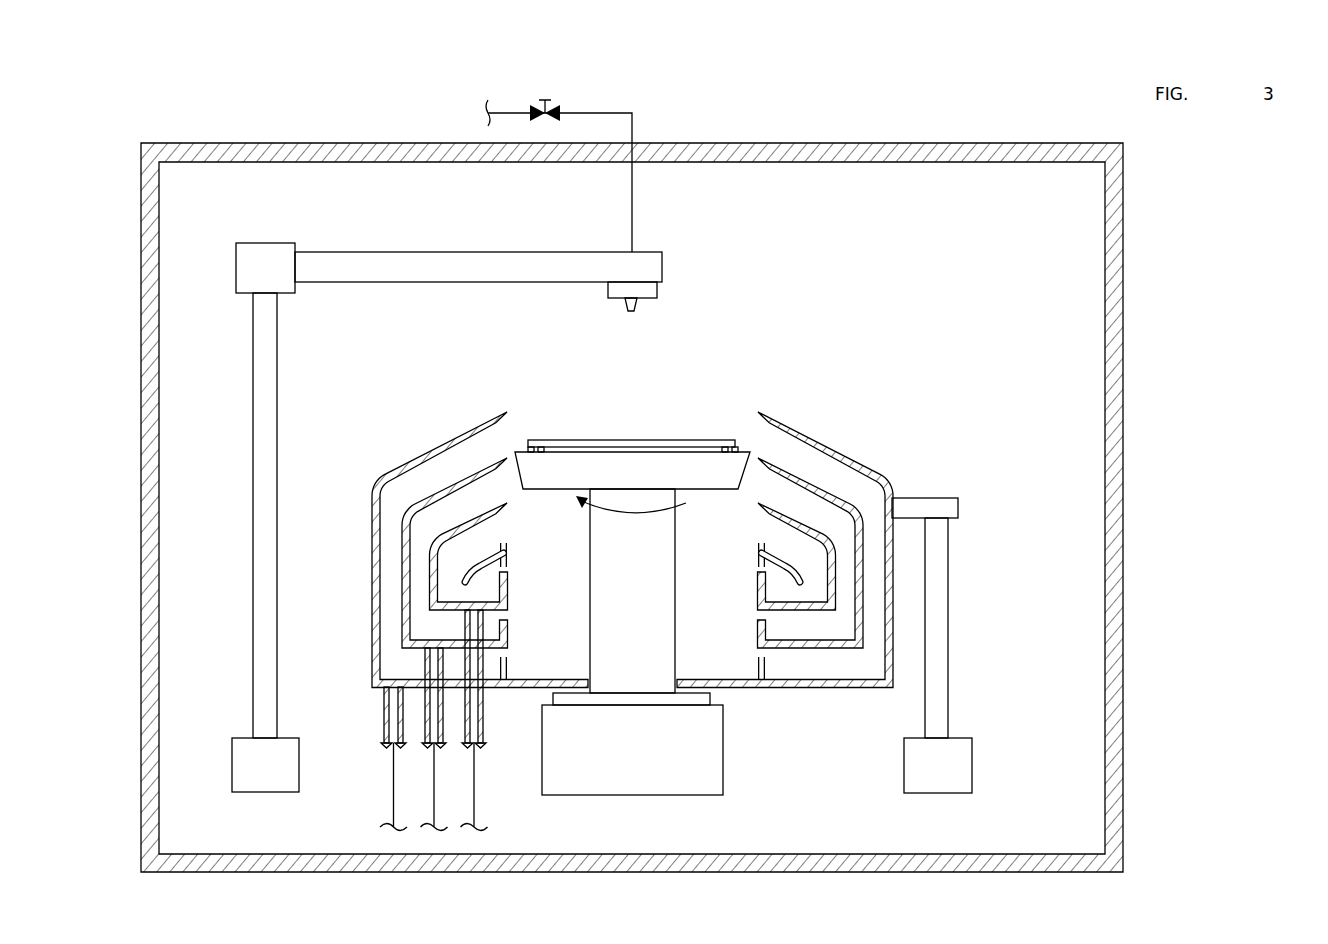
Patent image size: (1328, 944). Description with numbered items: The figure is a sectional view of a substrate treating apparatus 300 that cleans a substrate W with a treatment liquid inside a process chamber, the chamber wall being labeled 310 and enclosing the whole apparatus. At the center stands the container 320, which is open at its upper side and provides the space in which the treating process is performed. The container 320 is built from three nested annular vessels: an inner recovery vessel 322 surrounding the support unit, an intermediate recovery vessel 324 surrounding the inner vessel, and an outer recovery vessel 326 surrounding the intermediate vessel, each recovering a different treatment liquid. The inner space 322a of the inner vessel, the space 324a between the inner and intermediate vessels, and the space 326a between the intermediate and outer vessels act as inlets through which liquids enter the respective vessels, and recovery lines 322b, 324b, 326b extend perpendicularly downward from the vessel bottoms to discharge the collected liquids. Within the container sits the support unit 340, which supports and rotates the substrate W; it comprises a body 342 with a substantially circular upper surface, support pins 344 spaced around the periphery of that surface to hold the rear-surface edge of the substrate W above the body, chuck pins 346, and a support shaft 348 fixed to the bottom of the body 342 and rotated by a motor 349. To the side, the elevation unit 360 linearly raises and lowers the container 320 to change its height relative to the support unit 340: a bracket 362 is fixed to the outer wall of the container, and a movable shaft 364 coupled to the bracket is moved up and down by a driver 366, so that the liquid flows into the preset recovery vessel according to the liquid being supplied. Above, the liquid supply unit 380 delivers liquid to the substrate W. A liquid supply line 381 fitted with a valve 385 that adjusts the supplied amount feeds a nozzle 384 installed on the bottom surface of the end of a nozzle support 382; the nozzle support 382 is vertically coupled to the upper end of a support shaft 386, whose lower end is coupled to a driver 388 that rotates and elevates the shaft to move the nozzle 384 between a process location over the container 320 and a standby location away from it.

The substrate treating apparatus 300 is at (974, 300).
The chamber 310 is at (1124, 506).
The container 320 is at (608, 612).
The inner recovery vessel 322 is at (822, 536).
The intermediate recovery vessel 324 is at (813, 487).
The outer recovery vessel 326 is at (797, 433).
The inner space 322a is at (478, 520).
The space between inner and intermediate recovery vessels 324a is at (462, 484).
The space between intermediate and outer recovery vessels 326a is at (440, 445).
The recovery line 322b is at (474, 758).
The recovery line 324b is at (434, 785).
The recovery line 326b is at (394, 813).
The support unit 340 is at (644, 605).
The body 342 is at (648, 468).
The support pins 344 is at (545, 446).
The chuck pins 346 is at (531, 440).
The support shaft 348 is at (668, 500).
The motor 349 is at (652, 798).
The substrate W is at (616, 440).
The elevation unit 360 is at (991, 644).
The bracket 362 is at (952, 508).
The movable shaft 364 is at (938, 702).
The driver 366 is at (970, 765).
The liquid supply unit 380 is at (447, 428).
The liquid supply line 381 is at (592, 112).
The nozzle support 382 is at (426, 258).
The nozzle 384 is at (660, 291).
The valve 385 is at (545, 99).
The support shaft 386 is at (253, 426).
The driver 388 is at (245, 767).